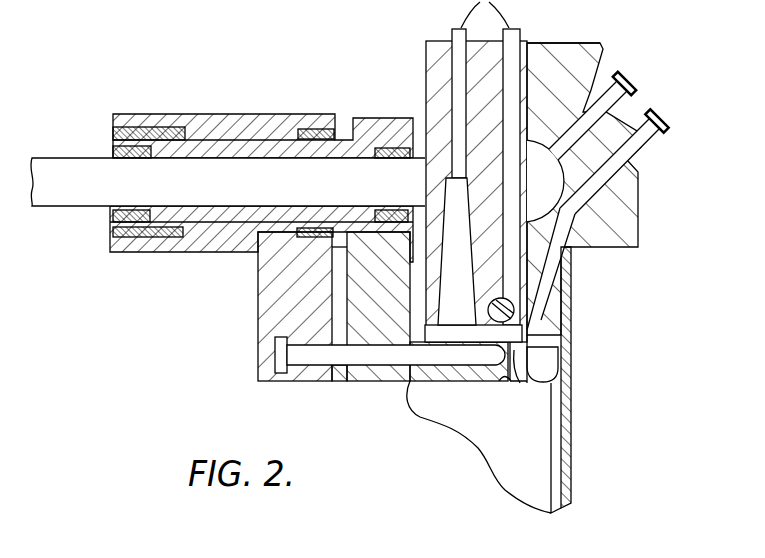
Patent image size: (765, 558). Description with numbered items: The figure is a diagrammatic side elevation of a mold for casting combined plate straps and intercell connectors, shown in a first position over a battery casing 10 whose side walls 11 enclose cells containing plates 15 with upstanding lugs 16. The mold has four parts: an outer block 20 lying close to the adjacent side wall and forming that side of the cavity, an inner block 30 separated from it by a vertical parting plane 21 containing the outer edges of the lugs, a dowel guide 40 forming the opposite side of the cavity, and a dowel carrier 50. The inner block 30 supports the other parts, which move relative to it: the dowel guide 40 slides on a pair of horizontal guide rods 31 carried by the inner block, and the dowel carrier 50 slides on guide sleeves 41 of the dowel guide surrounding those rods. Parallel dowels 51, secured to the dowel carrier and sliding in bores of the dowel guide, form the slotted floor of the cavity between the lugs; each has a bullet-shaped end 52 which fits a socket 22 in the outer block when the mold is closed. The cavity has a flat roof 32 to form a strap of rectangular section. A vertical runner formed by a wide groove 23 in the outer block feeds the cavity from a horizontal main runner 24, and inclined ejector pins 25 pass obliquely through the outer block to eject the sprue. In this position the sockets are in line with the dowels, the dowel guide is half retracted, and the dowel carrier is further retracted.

The molded casing 10 is at (577, 444).
The side walls 11 is at (587, 332).
The plates 15 is at (490, 453).
The lugs 16 is at (520, 384).
The outer block 20 is at (628, 248).
The parting plane 21 is at (532, 60).
The socket 22 is at (540, 358).
The groove 23 is at (537, 247).
The main runner 24 is at (554, 193).
The inclined ejector pins 25 is at (618, 112).
The inner block 30 is at (432, 78).
The guide rods 31 is at (240, 197).
The flat roof 32 is at (516, 321).
The dowel guide 40 is at (372, 370).
The guide sleeves 41 is at (128, 157).
The dowel carrier 50 is at (262, 318).
The dowels 51 is at (313, 356).
The bullet-shaped end 52 is at (503, 383).